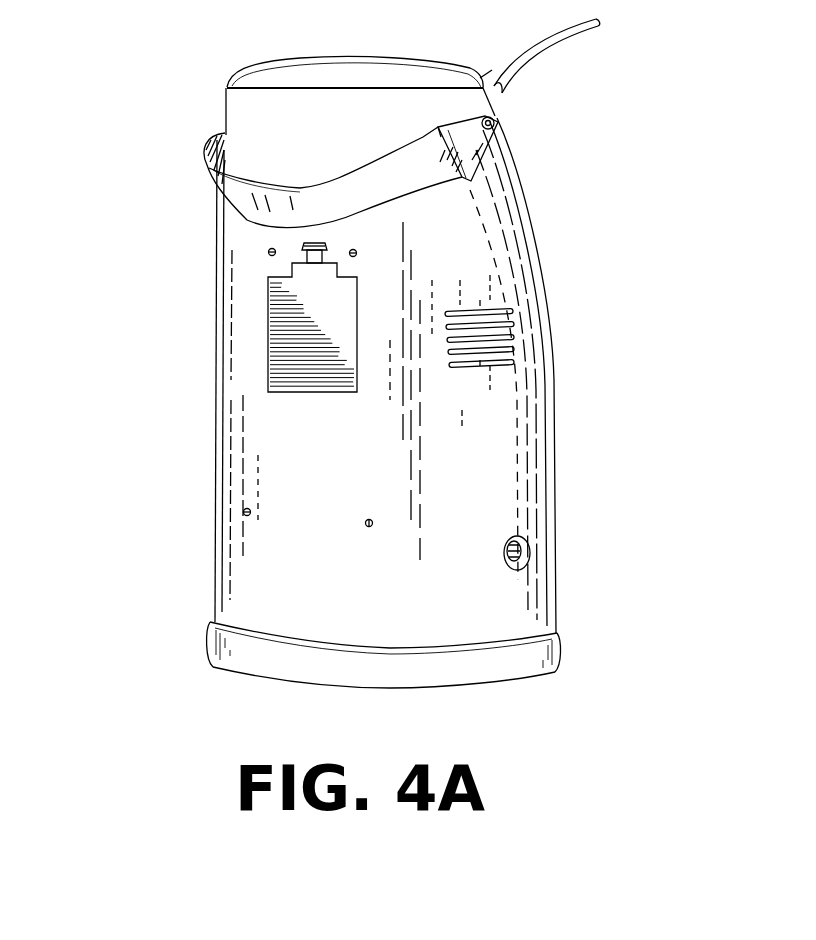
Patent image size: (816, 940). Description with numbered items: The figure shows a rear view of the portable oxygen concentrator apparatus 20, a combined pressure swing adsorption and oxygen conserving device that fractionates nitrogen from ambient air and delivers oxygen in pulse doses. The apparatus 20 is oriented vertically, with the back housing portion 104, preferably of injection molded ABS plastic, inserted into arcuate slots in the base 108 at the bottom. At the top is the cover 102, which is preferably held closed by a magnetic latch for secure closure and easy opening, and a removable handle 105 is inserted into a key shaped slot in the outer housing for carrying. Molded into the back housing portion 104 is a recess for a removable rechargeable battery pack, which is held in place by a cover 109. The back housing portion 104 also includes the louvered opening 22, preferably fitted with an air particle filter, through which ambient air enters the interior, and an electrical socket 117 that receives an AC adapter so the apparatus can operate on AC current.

The oxygen concentrator 20 is at (594, 468).
The cover 102 is at (347, 88).
The back housing portion 104 is at (337, 563).
The removable handle 105 is at (273, 203).
The base 108 is at (328, 683).
The cover 109 is at (323, 384).
The louvered opening 22 is at (467, 367).
The electrical socket 117 is at (503, 557).